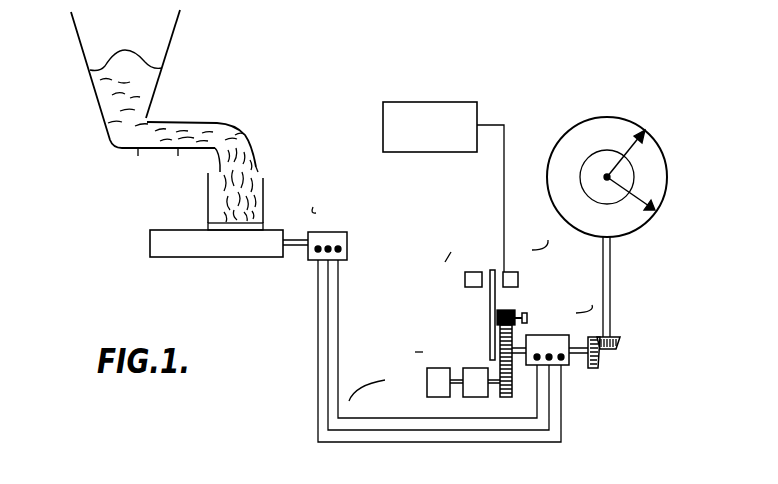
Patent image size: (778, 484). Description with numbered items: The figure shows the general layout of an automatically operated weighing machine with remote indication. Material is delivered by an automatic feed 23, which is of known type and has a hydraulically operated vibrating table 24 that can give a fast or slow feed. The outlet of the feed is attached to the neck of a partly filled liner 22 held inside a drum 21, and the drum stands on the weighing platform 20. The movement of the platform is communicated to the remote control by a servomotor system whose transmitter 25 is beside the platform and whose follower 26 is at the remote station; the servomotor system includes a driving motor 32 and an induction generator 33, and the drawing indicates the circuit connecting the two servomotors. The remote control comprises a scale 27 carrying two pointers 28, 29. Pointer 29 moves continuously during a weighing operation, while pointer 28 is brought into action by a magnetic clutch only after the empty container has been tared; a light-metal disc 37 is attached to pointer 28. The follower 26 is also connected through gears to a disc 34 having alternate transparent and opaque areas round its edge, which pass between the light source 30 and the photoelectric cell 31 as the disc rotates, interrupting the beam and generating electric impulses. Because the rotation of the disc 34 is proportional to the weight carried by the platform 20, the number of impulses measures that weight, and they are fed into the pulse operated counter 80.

The weighing platform 20 is at (158, 243).
The drum 21 is at (263, 184).
The liner 22 is at (254, 167).
The automatic feed 23 is at (148, 119).
The vibrating table 24 is at (157, 150).
The transmitter 25 is at (346, 220).
The follower 26 is at (566, 321).
The scale 27 is at (575, 132).
The pointer 28 is at (632, 147).
The pointer 29 is at (632, 200).
The light source 30 is at (478, 271).
The photoelectric cell 31 is at (527, 256).
The driving motor 32 is at (475, 371).
The induction generator 33 is at (427, 376).
The disc 34 is at (491, 343).
The disc 37 is at (588, 173).
The pulse operated counter 80 is at (383, 125).